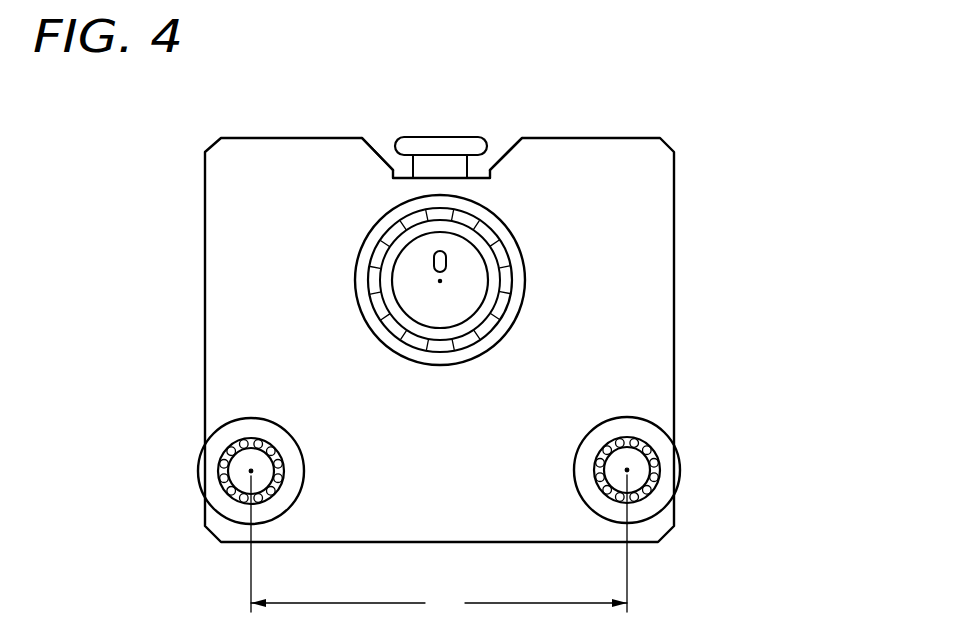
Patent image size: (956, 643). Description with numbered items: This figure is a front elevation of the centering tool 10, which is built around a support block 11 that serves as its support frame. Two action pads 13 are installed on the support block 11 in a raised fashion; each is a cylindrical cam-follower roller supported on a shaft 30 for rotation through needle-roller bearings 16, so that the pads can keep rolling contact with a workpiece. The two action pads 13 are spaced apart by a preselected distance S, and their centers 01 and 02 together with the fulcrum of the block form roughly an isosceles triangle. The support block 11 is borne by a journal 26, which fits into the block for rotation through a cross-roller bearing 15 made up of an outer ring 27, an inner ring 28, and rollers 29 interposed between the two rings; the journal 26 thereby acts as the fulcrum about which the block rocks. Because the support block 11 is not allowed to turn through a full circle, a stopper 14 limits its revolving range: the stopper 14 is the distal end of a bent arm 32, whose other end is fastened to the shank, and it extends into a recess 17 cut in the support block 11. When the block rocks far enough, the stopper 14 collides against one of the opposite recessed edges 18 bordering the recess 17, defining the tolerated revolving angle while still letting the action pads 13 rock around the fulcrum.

The centering tool 10 is at (479, 304).
The support block 11 is at (648, 197).
The action pads 13 is at (212, 488).
The stopper 14 is at (447, 95).
The cross-roller bearing 15 is at (467, 229).
The bearings 16 is at (237, 500).
The recess 17 is at (412, 166).
The recessed edges 18 is at (378, 153).
The journal 26 is at (468, 287).
The outer ring 27 is at (372, 242).
The inner ring 28 is at (393, 296).
The rollers 29 is at (520, 307).
The shafts 30 is at (240, 452).
The bent arm 32 is at (445, 150).
The center of action pad 01 is at (251, 471).
The center of action pad 02 is at (627, 470).
The preselected distance S is at (439, 547).